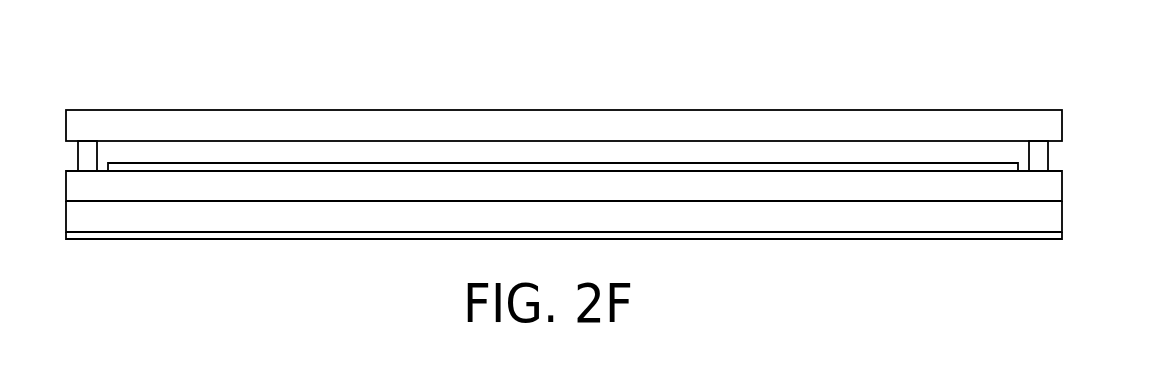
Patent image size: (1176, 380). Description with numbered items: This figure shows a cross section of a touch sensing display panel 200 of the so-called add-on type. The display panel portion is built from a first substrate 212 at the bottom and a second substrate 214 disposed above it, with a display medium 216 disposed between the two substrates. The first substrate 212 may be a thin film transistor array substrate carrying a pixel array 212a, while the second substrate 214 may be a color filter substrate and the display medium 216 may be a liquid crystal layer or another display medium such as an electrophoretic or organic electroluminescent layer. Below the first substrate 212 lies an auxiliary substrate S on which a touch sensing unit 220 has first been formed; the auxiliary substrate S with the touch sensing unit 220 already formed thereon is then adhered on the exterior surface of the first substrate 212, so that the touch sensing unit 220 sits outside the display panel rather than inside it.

The touch sensing display panel 200 is at (1026, 72).
The second substrate 214 is at (1047, 122).
The display medium 216 is at (1017, 153).
The pixel array 212a is at (955, 168).
The first substrate 212 is at (1047, 188).
The auxiliary substrate S is at (1047, 218).
The touch sensing unit 220 is at (1047, 235).